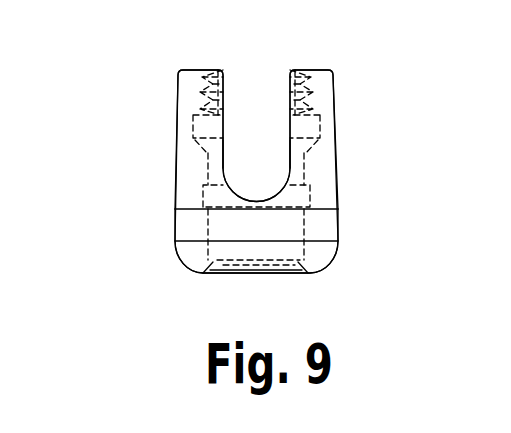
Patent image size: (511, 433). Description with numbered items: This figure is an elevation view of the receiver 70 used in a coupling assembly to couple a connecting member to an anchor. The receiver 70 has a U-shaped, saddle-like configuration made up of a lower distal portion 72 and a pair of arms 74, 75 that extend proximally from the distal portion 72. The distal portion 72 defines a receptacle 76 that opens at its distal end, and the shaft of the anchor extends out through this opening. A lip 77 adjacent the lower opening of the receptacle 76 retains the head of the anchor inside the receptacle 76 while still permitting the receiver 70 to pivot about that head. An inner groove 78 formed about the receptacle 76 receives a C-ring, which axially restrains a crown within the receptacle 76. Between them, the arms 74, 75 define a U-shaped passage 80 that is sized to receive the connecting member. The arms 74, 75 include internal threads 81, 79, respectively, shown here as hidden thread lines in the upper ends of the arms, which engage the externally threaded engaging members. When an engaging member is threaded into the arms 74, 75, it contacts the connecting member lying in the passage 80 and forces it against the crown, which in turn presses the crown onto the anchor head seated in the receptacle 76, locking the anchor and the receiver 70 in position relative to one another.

The receiver 70 is at (367, 100).
The lower distal portion 72 is at (175, 229).
The arm 74 is at (182, 95).
The arm 75 is at (335, 117).
The receptacle 76 is at (237, 268).
The lip 77 is at (303, 283).
The inner groove 78 is at (310, 203).
The internal threads 79 is at (306, 84).
The U-shaped passage 80 is at (250, 170).
The internal threads 81 is at (222, 86).